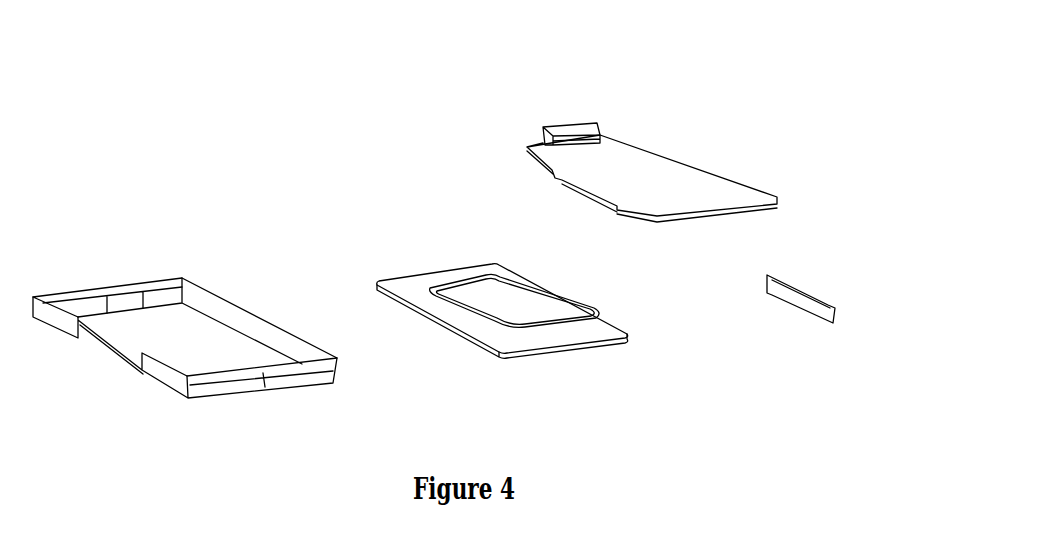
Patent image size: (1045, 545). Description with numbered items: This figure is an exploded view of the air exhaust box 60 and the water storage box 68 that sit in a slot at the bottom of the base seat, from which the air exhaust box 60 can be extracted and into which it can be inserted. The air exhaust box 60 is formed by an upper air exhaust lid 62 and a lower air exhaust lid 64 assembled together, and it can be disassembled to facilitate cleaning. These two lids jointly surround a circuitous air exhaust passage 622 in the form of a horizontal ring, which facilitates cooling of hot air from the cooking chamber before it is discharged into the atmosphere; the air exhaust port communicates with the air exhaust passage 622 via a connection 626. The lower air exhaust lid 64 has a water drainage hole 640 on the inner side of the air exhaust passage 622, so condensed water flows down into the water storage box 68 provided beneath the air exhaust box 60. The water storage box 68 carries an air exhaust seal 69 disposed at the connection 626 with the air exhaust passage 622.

The air exhaust box 60 is at (473, 227).
The upper air exhaust lid 62 is at (600, 172).
The connection 626 is at (599, 126).
The lower air exhaust lid 64 is at (478, 277).
The water drainage hole 640 is at (497, 311).
The air exhaust passage 622 is at (532, 338).
The water storage box 68 is at (163, 334).
The air exhaust seal 69 is at (828, 295).